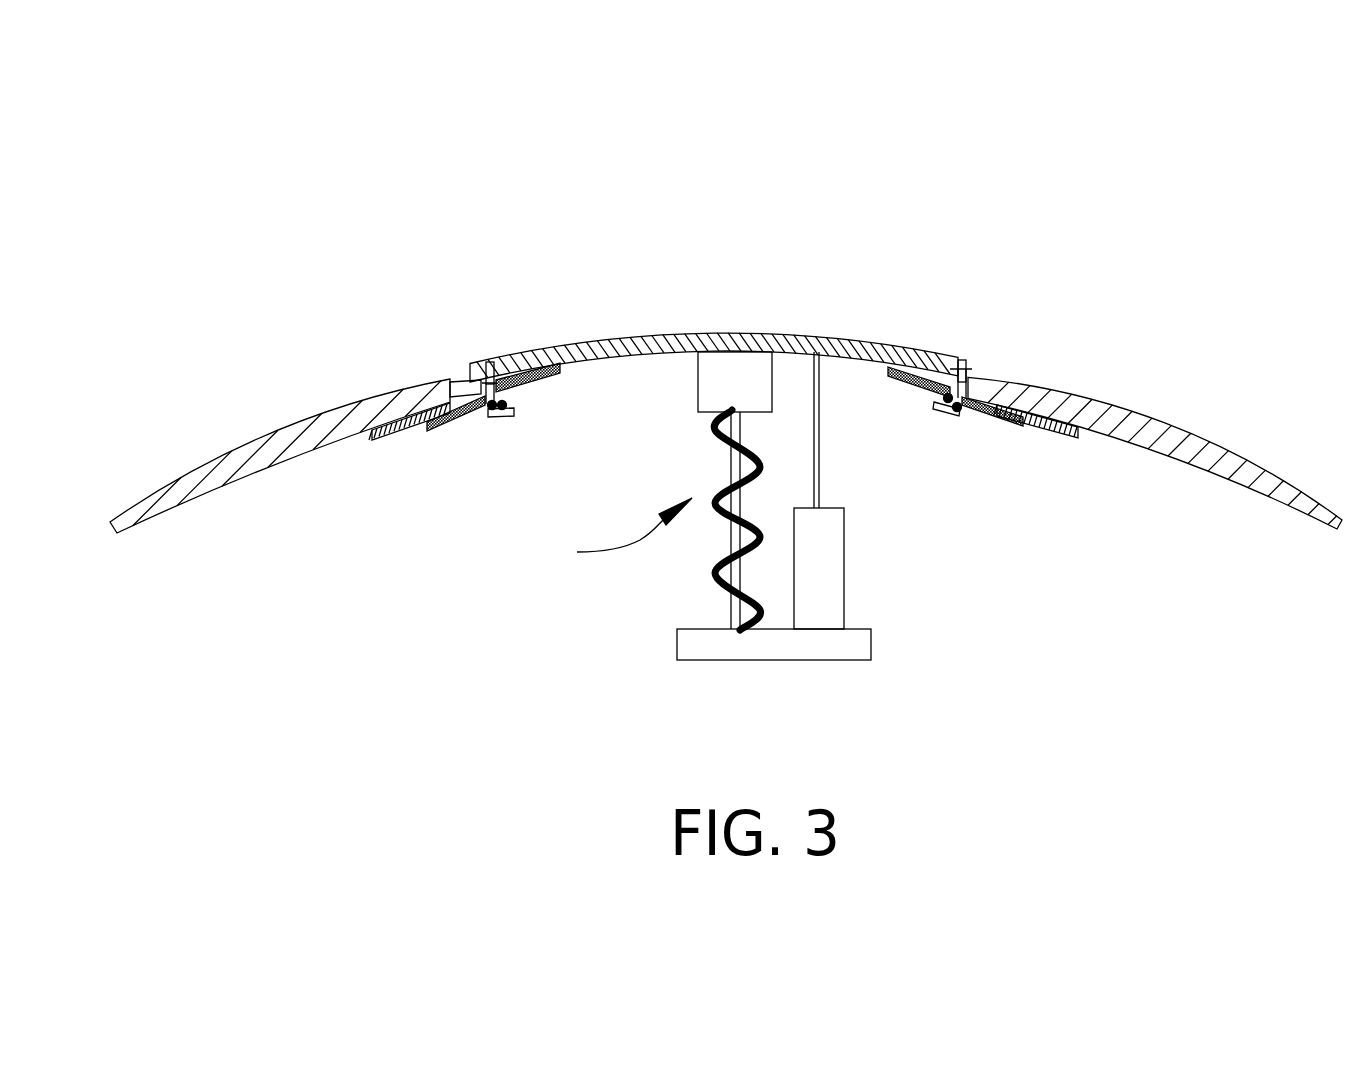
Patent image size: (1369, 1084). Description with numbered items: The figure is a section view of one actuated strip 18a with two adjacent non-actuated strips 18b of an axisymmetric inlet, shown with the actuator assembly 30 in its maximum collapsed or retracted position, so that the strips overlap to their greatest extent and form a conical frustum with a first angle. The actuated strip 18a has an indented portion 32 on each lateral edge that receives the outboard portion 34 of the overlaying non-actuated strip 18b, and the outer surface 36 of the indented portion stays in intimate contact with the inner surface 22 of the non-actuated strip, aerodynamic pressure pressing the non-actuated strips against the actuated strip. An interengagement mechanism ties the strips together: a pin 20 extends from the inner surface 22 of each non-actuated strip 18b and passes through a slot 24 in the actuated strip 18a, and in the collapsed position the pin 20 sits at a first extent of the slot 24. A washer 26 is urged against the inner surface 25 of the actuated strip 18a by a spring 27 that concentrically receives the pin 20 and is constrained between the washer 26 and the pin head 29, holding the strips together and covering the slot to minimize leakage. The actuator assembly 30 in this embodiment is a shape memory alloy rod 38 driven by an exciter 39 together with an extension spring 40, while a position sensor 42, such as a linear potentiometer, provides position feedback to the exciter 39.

The actuated strip 18a is at (735, 335).
The non-actuated strip 18b is at (726, 438).
The pin 20 is at (487, 380).
The inner surface 22 is at (324, 455).
The slot 24 is at (463, 382).
The inner surface 25 is at (675, 381).
The washer 26 is at (450, 425).
The spring 27 is at (500, 410).
The pin head 29 is at (513, 407).
The actuator assembly 30 is at (613, 534).
The indented portion 32 is at (385, 435).
The outboard portion 34 is at (447, 385).
The outer surface 36 is at (676, 449).
The shape memory alloy rod 38 is at (728, 541).
The exciter 39 is at (740, 383).
The extension spring 40 is at (722, 590).
The position sensor 42 is at (817, 486).